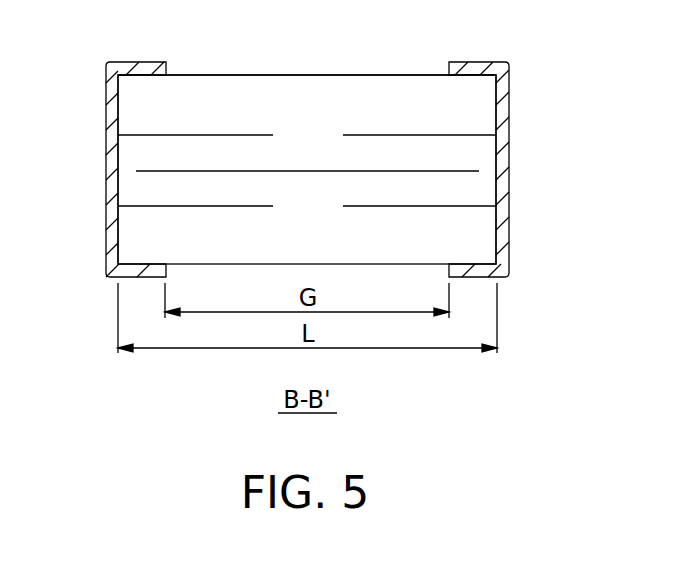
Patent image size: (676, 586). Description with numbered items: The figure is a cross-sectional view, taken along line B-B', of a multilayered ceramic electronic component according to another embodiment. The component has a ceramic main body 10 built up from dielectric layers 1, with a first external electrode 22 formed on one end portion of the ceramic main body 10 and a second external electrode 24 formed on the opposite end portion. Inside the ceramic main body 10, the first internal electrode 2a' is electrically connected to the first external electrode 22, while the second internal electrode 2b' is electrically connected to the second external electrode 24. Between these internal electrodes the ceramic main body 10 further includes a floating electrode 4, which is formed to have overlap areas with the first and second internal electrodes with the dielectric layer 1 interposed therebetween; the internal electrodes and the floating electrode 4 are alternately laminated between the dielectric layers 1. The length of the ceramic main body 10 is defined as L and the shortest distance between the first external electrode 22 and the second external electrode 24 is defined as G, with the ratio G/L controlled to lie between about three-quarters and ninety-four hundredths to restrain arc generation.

The dielectric layer 1 is at (182, 93).
The ceramic main body 10 is at (288, 75).
The first external electrode 22 is at (136, 69).
The second external electrode 24 is at (474, 70).
The first internal electrode 2a' is at (195, 71).
The floating electrode 4 is at (338, 171).
The second internal electrode 2b' is at (153, 222).